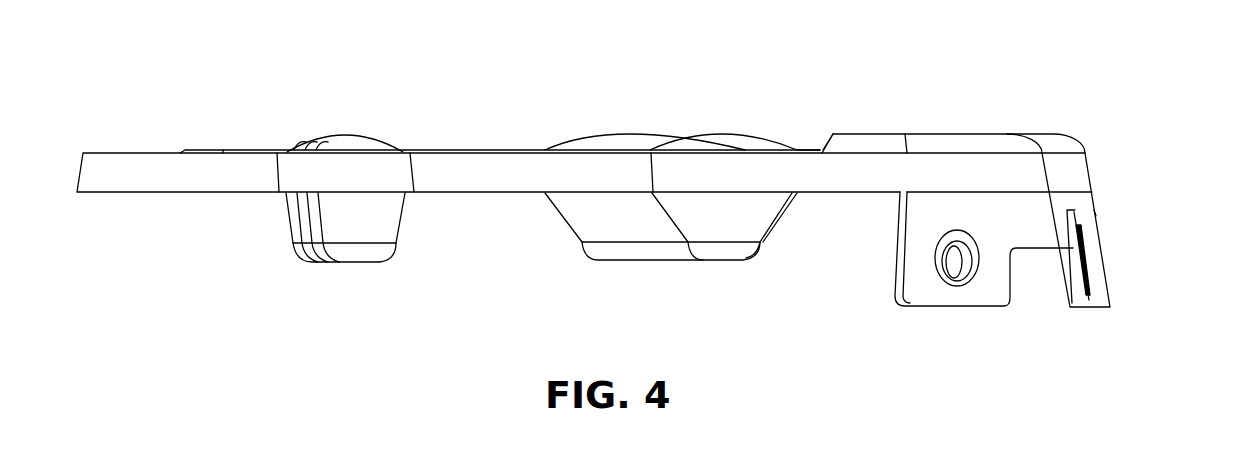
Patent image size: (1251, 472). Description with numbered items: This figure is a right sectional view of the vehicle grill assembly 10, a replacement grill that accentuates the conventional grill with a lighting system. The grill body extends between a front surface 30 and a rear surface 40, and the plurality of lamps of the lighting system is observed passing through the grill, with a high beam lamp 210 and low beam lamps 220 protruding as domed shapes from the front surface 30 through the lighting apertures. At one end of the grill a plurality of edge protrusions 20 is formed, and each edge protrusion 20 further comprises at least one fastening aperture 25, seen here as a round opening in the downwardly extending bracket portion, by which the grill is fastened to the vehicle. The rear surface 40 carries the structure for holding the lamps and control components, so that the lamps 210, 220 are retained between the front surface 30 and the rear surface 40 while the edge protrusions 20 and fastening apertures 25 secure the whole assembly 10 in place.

The sensor assembly 10 is at (1152, 330).
The edge protrusion 20 is at (997, 293).
The fastening aperture 25 is at (955, 267).
The front surface 30 is at (472, 150).
The rear surface 40 is at (433, 194).
The high beam lamp 210 is at (630, 145).
The low beam lamp 220 is at (300, 147).